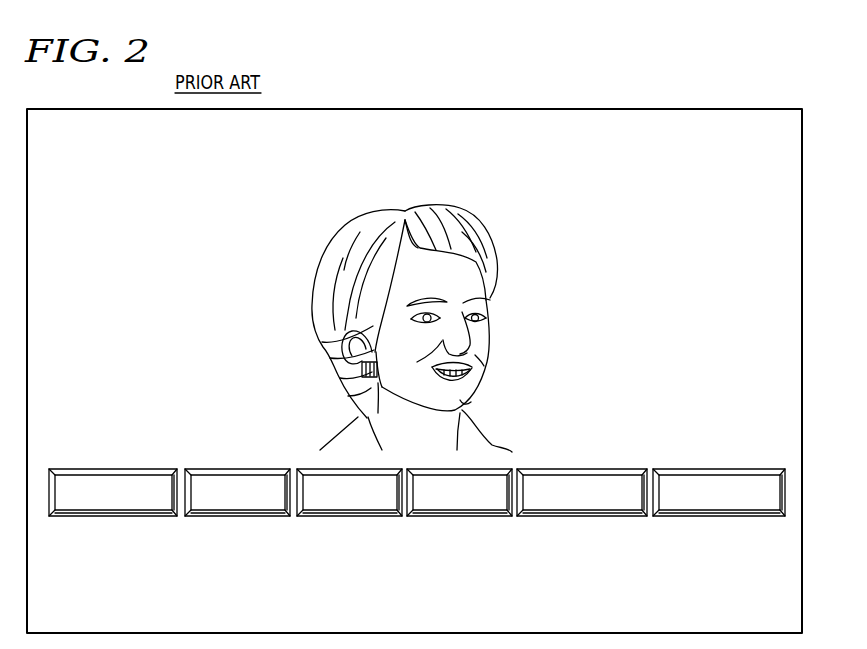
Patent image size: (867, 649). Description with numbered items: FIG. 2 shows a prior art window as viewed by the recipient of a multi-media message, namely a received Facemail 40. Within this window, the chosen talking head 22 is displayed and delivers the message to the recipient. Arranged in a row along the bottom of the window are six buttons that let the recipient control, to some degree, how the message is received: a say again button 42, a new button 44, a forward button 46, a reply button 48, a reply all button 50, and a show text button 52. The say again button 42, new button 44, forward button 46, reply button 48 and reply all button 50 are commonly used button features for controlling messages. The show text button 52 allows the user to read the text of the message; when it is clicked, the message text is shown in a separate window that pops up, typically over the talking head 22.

The received Facemail 40 is at (582, 108).
The talking head 22 is at (485, 228).
The say again button 42 is at (108, 516).
The new button 44 is at (230, 516).
The forward button 46 is at (345, 516).
The reply button 48 is at (450, 516).
The reply all button 50 is at (568, 516).
The show text button 52 is at (710, 516).